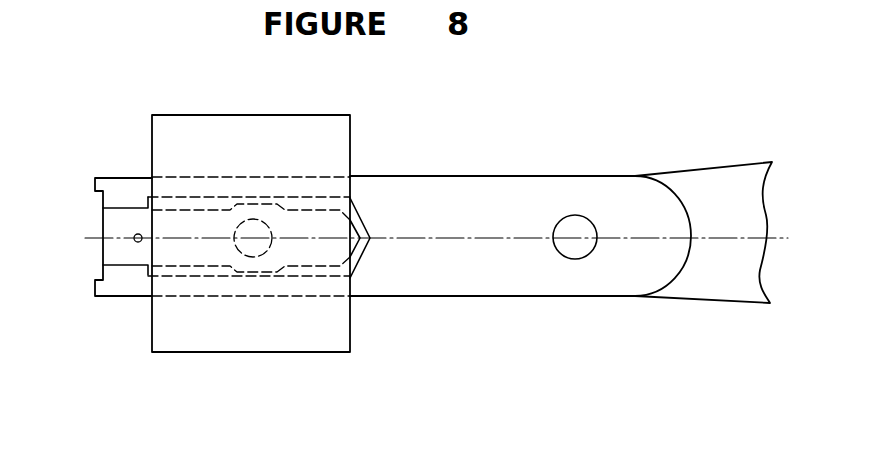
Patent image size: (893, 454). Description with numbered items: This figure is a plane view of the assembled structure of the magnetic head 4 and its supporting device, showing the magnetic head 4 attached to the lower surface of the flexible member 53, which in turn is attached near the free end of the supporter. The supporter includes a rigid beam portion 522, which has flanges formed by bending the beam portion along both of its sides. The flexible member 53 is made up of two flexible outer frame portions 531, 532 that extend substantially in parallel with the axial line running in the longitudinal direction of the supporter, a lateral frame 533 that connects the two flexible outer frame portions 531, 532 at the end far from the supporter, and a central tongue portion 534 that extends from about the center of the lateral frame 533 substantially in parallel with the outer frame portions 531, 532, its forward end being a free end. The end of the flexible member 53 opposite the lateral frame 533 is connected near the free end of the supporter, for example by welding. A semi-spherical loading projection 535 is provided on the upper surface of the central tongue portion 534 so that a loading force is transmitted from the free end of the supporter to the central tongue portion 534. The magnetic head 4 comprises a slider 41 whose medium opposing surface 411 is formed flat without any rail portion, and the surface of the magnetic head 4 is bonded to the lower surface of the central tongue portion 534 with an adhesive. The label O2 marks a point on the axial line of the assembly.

The magnetic head 4 is at (297, 112).
The slider 41 is at (278, 327).
The medium opposing surface 411 is at (220, 167).
The flexible member 53 is at (455, 200).
The rigid beam portion 522 is at (680, 285).
The flexible outer frame portion 531 is at (193, 188).
The flexible outer frame portion 532 is at (208, 287).
The lateral frame 533 is at (142, 272).
The central tongue portion 534 is at (360, 247).
The loading projection 535 is at (267, 252).
The axis point O2 is at (770, 237).